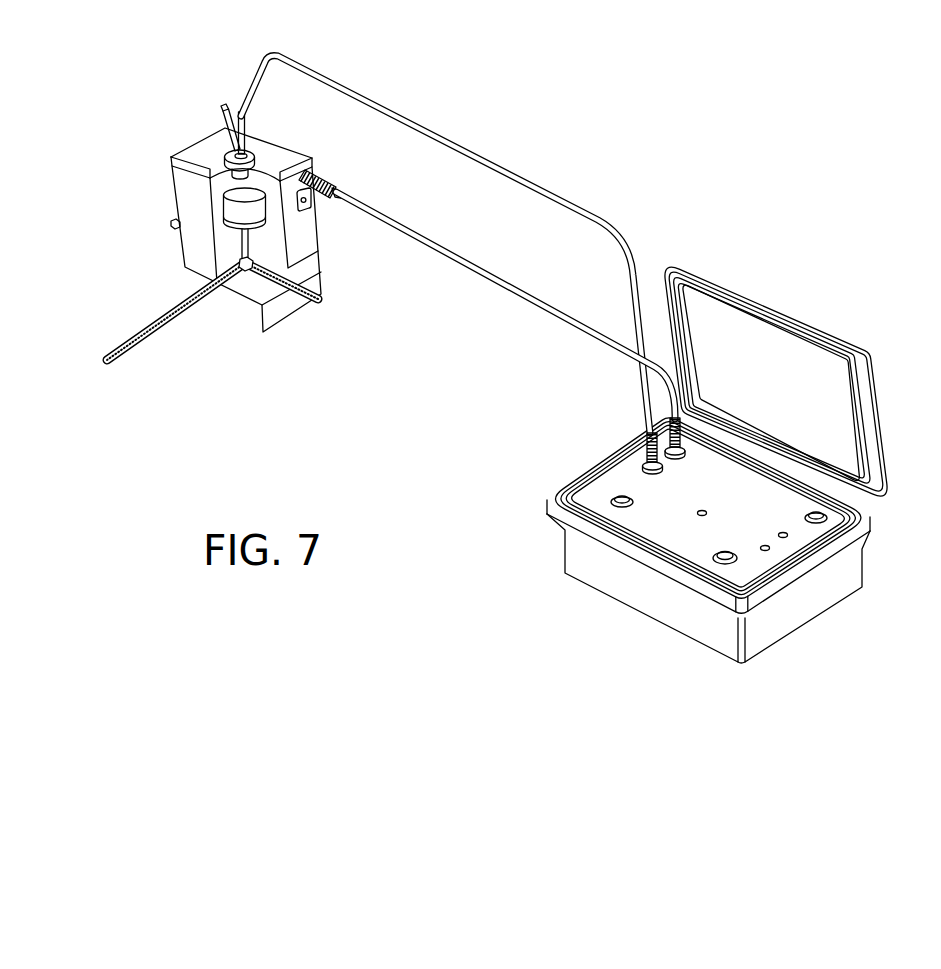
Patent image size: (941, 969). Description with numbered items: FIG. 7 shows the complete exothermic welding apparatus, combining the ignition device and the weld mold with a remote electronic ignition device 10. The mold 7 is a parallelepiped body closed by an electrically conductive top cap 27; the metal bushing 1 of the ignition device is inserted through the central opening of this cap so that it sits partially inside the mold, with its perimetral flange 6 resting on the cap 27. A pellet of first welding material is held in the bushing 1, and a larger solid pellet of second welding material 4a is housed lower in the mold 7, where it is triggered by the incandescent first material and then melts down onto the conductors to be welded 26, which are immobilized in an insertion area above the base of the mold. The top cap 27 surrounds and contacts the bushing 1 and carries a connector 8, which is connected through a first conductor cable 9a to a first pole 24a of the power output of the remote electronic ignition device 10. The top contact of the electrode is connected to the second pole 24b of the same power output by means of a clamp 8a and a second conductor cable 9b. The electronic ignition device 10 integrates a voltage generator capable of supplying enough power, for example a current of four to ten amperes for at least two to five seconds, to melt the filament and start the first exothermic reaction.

The metal bushing 1 is at (248, 162).
The second welding material 4a is at (243, 215).
The perimetral flange 6 is at (238, 151).
The mold 7 is at (303, 243).
The connector 8 is at (323, 191).
The clamp 8a is at (230, 112).
The first conductor cable 9a is at (453, 256).
The second conductor cable 9b is at (448, 141).
The remote electronic ignition device 10 is at (580, 550).
The first pole 24a is at (663, 446).
The second pole 24b is at (647, 463).
The conductors to be welded 26 is at (173, 223).
The top cap 27 is at (182, 178).